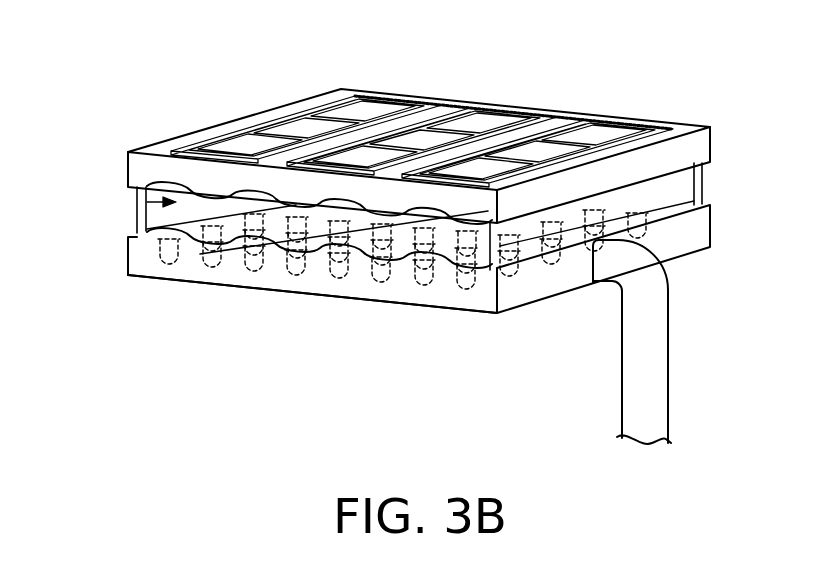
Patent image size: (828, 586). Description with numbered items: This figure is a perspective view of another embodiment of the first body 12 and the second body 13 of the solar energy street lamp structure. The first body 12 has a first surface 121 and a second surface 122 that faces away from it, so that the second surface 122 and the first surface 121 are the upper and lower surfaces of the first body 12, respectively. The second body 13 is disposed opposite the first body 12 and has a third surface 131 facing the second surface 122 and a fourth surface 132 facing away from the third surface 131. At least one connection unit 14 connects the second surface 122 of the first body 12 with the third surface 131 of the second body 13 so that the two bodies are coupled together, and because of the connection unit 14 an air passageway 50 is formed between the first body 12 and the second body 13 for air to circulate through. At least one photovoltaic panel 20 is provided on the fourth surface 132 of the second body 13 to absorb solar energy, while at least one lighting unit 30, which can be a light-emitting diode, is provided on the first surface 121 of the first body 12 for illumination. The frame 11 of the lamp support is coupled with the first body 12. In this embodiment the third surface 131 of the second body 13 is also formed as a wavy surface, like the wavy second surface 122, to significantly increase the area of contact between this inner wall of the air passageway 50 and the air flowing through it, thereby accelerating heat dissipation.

The frame 11 is at (652, 363).
The first body 12 is at (700, 237).
The first surface 121 is at (197, 283).
The second surface 122 is at (137, 225).
The second body 13 is at (704, 142).
The third surface 131 is at (137, 188).
The fourth surface 132 is at (163, 152).
The connection unit 14 is at (700, 182).
The photovoltaic panel 20 is at (493, 117).
The lighting unit 30 is at (325, 291).
The air passageway 50 is at (137, 202).